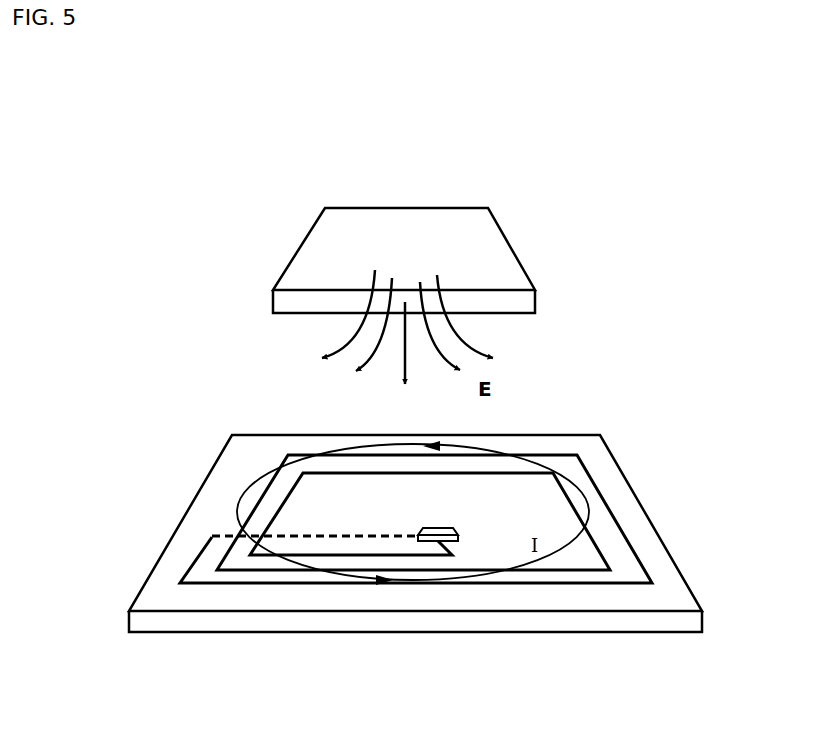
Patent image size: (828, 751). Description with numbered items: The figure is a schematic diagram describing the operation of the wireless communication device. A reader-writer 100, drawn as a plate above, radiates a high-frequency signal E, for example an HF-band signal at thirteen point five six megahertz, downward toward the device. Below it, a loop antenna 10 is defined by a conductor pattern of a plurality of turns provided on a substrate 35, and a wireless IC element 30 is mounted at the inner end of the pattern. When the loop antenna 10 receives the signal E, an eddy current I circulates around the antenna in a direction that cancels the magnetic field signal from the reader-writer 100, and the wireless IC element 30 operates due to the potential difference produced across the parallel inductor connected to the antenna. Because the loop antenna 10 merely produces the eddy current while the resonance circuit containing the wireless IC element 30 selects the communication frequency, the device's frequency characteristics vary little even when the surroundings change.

The reader-writer 100 is at (498, 248).
The loop antenna 10 is at (627, 540).
The wireless IC element 30 is at (440, 527).
The substrate 35 is at (688, 585).